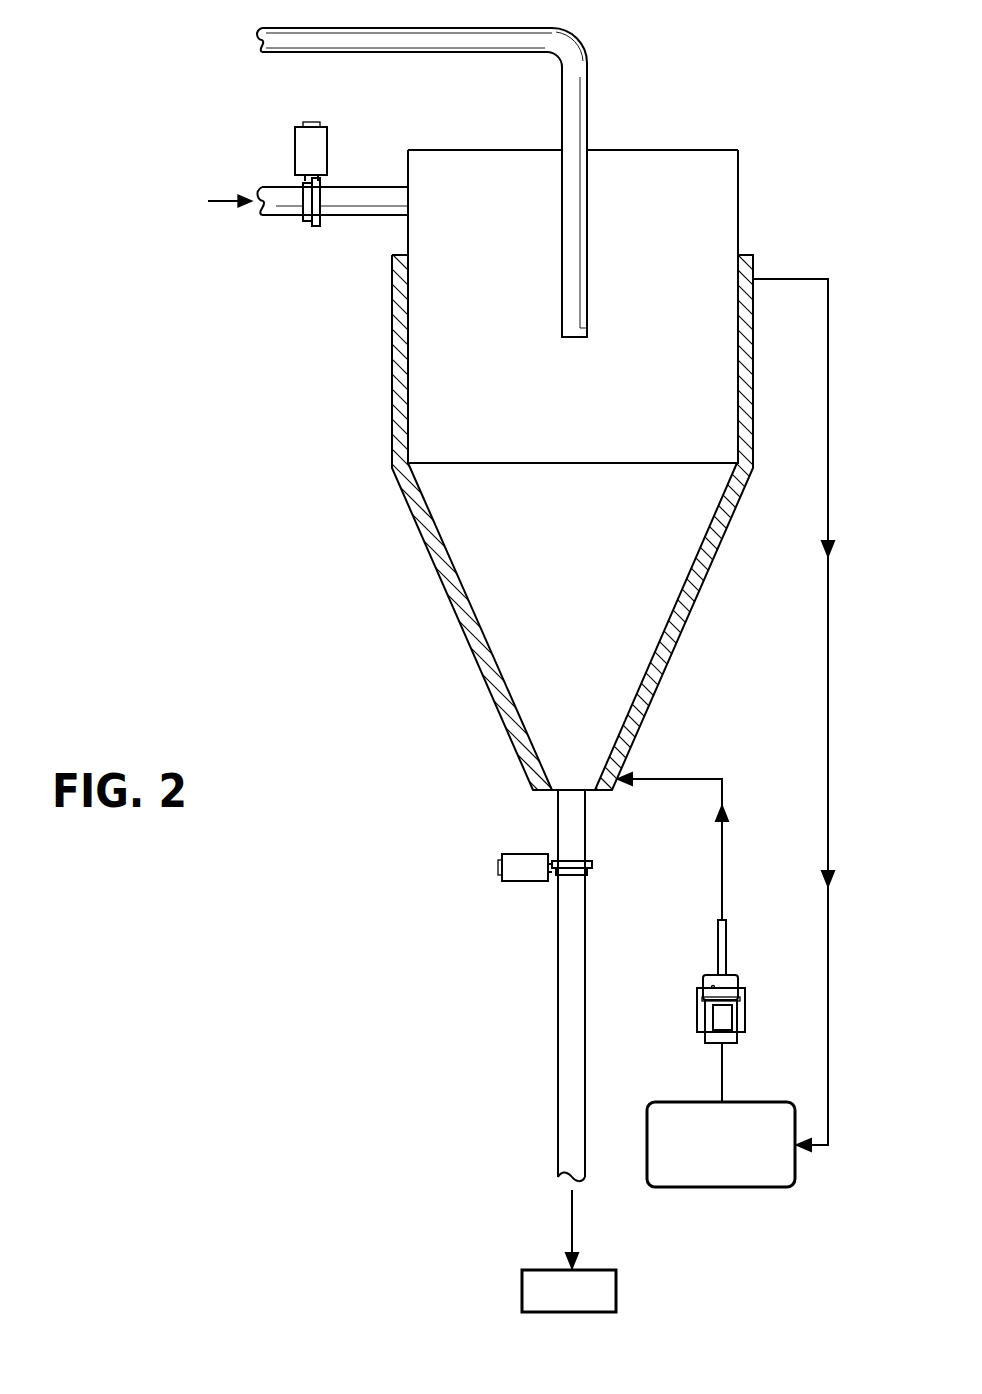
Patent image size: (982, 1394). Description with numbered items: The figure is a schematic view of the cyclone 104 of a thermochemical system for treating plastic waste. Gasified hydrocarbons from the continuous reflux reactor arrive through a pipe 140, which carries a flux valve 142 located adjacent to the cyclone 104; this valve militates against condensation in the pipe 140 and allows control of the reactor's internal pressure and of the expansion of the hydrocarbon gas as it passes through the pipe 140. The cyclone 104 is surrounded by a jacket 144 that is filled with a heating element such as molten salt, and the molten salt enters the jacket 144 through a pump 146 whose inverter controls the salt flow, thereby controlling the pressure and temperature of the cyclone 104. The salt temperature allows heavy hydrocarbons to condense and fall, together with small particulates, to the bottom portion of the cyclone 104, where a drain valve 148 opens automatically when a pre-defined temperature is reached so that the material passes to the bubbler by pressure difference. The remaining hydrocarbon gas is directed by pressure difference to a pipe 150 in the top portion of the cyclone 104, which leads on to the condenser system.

The cyclone 104 is at (831, 58).
The pipe 140 is at (262, 187).
The flux valve 142 is at (327, 135).
The jacket 144 is at (690, 613).
The pump 146 is at (728, 972).
The drain valve 148 is at (510, 881).
The pipe 150 is at (588, 127).